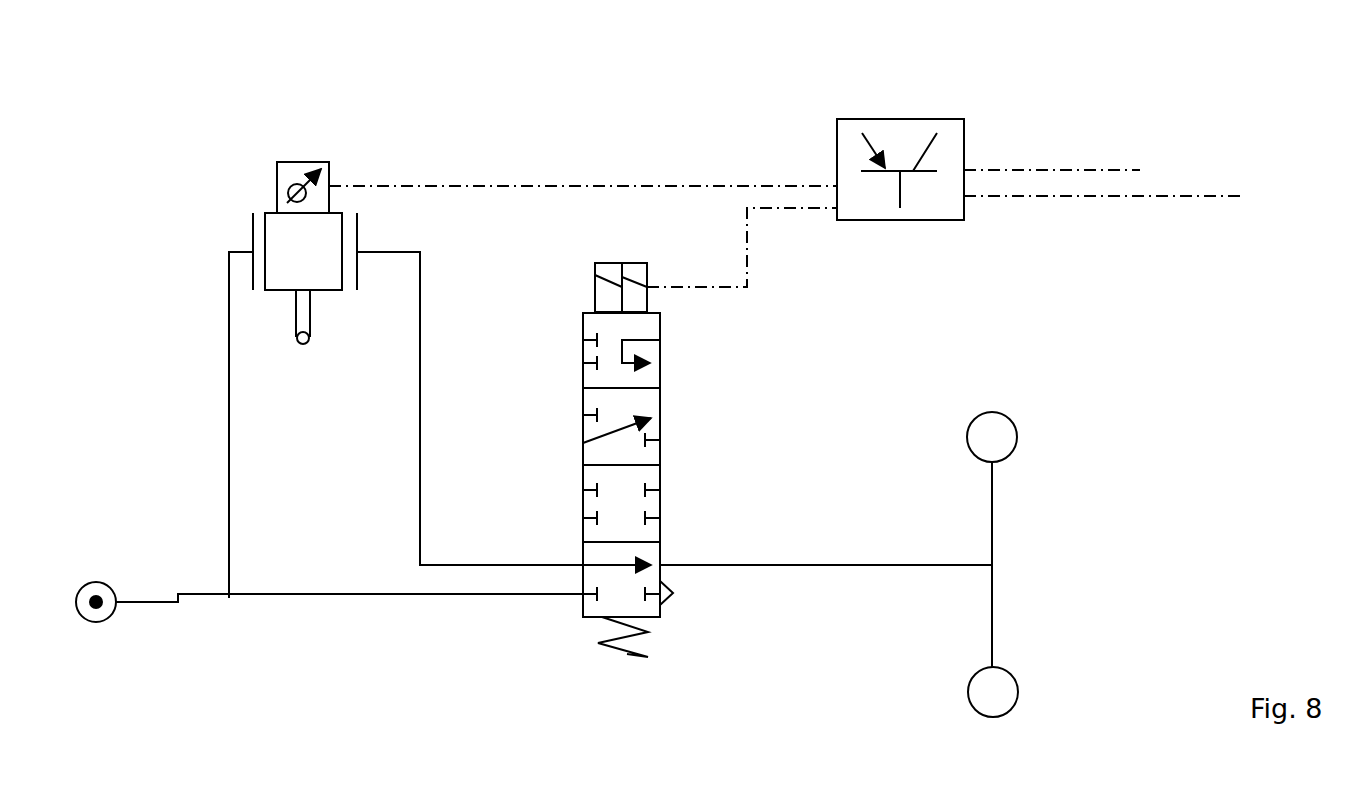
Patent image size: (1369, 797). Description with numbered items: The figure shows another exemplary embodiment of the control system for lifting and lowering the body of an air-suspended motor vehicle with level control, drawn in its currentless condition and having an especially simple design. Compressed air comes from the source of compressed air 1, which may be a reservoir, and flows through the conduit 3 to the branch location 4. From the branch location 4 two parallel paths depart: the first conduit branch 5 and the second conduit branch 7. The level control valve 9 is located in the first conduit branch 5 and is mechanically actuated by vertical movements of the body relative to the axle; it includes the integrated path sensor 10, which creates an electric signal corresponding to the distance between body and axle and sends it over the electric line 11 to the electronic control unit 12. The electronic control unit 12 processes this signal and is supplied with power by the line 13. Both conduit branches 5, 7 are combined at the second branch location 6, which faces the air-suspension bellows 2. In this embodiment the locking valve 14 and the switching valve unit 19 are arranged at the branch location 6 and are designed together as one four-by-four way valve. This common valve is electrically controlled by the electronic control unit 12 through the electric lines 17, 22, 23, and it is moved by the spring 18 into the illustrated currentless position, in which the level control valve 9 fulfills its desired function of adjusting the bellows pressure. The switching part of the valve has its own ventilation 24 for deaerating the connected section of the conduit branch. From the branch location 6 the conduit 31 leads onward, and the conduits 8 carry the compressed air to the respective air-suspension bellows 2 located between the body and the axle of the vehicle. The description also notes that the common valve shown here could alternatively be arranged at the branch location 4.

The source of compressed air 1 is at (98, 610).
The air-suspension bellows 2 is at (1000, 440).
The conduit 3 is at (148, 605).
The branch location 4 is at (229, 597).
The first conduit branch 5 is at (229, 418).
The second branch location 6 is at (663, 565).
The second conduit branch 7 is at (363, 597).
The conduits 8 is at (995, 518).
The level control valve 9 is at (243, 232).
The path sensor 10 is at (278, 158).
The electric line 11 is at (567, 184).
The electronic control unit 12 is at (895, 130).
The line 13 is at (1019, 171).
The locking valve 14 is at (705, 440).
The electric line 17 is at (794, 252).
The spring 18 is at (627, 655).
The switching valve unit 19 is at (621, 440).
The electric line 22 is at (742, 247).
The electric line 23 is at (747, 255).
The ventilation 24 is at (668, 600).
The conduit 31 is at (823, 567).